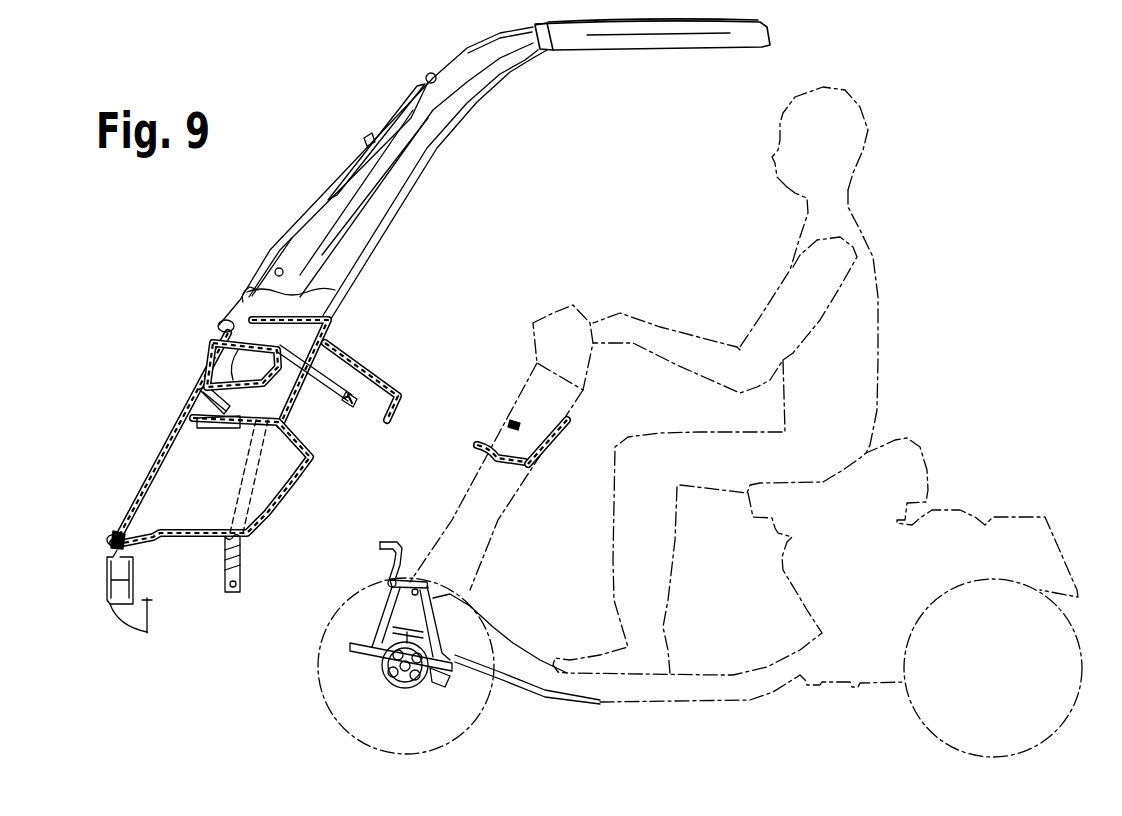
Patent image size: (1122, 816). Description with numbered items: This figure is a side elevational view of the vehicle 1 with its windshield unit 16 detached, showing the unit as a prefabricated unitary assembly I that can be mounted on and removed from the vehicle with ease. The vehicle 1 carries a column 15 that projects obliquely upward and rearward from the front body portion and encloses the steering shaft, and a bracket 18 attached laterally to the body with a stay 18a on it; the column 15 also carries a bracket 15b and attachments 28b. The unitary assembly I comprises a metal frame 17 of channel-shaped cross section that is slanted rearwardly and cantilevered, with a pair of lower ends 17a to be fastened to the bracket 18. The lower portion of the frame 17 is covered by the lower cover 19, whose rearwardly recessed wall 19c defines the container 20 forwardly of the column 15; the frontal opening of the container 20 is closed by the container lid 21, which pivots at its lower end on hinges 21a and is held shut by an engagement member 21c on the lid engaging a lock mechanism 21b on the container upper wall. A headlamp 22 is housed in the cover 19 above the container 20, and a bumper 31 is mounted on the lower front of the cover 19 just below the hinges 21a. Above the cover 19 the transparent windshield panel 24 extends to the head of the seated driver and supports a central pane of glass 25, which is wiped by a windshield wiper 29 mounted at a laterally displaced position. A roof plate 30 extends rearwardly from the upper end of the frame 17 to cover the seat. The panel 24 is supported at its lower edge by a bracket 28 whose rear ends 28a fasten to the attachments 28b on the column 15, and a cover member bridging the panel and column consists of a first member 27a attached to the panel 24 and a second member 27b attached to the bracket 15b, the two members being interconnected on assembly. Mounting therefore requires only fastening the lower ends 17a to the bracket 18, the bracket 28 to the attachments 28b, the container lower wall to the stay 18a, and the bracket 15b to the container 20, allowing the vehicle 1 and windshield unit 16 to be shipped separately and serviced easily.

The vehicle 1 is at (603, 704).
The column 15 is at (500, 520).
The bracket 15b is at (473, 443).
The windshield unit 16 is at (266, 250).
The frame 17 is at (415, 180).
The lower ends 17a is at (242, 570).
The bracket 18 is at (457, 597).
The stay 18a is at (390, 540).
The lower cover 19 is at (196, 380).
The rearwardly recessed wall 19c is at (307, 477).
The container 20 is at (172, 479).
The container lid 21 is at (165, 443).
The hinges 21a is at (117, 530).
The lock mechanism 21b is at (217, 430).
The engagement member 21c is at (190, 410).
The headlamp 22 is at (247, 360).
The windshield panel 24 is at (433, 110).
The pane of glass 25 is at (300, 222).
The first member 27a is at (340, 350).
The second member 27b is at (563, 420).
The bracket 28 is at (320, 385).
The rear ends 28a is at (349, 406).
The attachments 28b is at (517, 427).
The windshield wiper 29 is at (329, 190).
The roof plate 30 is at (673, 40).
The bumper 31 is at (105, 576).
The unitary assembly I is at (336, 133).